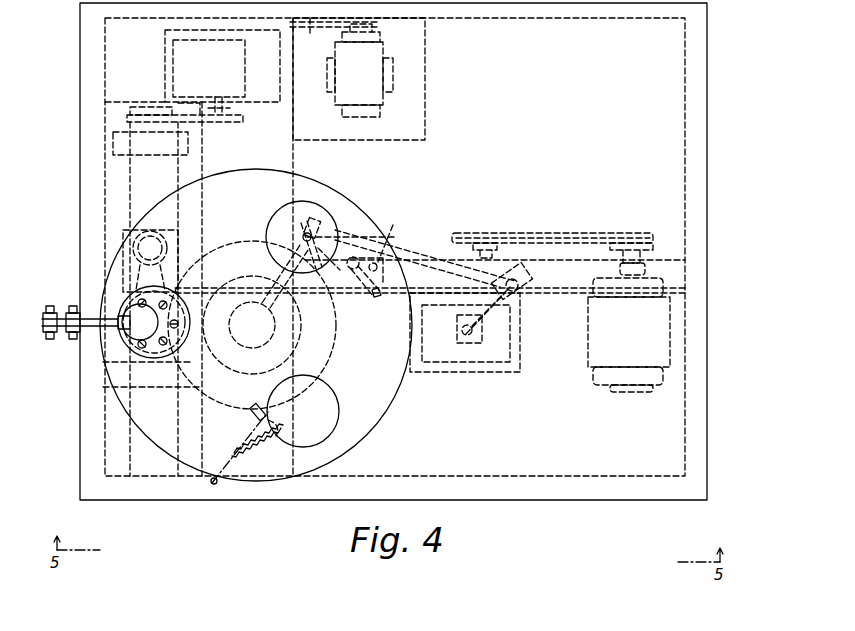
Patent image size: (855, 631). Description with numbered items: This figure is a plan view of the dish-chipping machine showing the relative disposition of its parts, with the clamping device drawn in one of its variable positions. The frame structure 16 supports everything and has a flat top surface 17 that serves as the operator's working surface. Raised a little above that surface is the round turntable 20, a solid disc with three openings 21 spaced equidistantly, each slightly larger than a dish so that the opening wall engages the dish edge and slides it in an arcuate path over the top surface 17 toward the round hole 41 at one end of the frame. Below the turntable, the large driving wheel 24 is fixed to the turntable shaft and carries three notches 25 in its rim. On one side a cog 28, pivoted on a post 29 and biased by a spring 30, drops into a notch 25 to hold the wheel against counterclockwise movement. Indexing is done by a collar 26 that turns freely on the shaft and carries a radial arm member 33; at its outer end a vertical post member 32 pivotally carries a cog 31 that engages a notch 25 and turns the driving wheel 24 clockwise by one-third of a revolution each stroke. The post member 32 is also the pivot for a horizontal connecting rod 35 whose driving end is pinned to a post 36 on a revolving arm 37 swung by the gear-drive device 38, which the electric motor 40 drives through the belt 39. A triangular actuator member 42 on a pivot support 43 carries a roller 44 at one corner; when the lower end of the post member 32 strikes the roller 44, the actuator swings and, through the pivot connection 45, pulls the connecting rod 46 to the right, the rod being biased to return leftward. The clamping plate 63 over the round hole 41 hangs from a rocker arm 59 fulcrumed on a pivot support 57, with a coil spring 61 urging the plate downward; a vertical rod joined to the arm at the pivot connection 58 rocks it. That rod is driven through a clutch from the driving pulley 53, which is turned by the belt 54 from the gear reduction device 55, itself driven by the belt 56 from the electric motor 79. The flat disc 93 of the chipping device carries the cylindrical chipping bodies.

The frame structure 16 is at (707, 232).
The flat top surface 17 is at (598, 470).
The turntable 20 is at (356, 197).
The openings 21 is at (288, 207).
The driving wheel 24 is at (336, 347).
The notches 25 is at (318, 263).
The collar 26 is at (256, 348).
The cog 28 is at (236, 438).
The post 29 is at (276, 438).
The spring 30 is at (238, 455).
The cog 31 is at (334, 234).
The post member 32 is at (310, 220).
The arm member 33 is at (268, 272).
The connecting rod 35 is at (408, 244).
The post 36 is at (522, 280).
The revolving arm 37 is at (500, 328).
The gear-drive device 38 is at (520, 364).
The belt 39 is at (574, 234).
The electric motor 40 is at (590, 366).
The round hole 41 is at (163, 358).
The actuator member 42 is at (384, 272).
The pivot support 43 is at (390, 235).
The roller 44 is at (352, 285).
The pivot connection 45 is at (378, 296).
The connecting rod 46 is at (309, 292).
The driving pulley 53 is at (130, 126).
The belt 54 is at (212, 120).
The gear reduction device 55 is at (243, 92).
The belt 56 is at (359, 79).
The pivot support 57 is at (73, 312).
The pivot connection 58 is at (46, 312).
The rocker arm 59 is at (60, 314).
The coil spring 61 is at (134, 336).
The clamping plate 63 is at (142, 298).
The electric motor 79 is at (386, 52).
The disc 93 is at (128, 298).